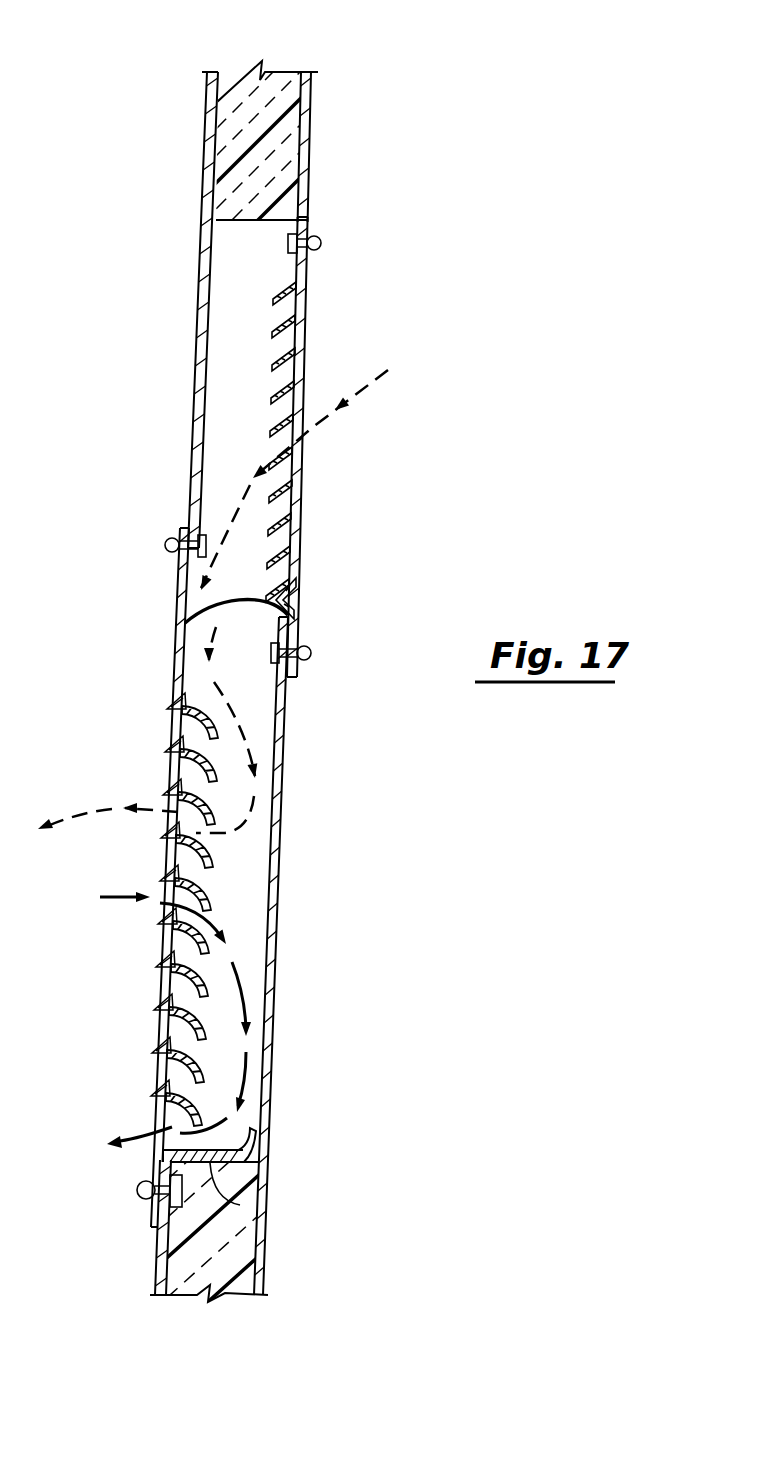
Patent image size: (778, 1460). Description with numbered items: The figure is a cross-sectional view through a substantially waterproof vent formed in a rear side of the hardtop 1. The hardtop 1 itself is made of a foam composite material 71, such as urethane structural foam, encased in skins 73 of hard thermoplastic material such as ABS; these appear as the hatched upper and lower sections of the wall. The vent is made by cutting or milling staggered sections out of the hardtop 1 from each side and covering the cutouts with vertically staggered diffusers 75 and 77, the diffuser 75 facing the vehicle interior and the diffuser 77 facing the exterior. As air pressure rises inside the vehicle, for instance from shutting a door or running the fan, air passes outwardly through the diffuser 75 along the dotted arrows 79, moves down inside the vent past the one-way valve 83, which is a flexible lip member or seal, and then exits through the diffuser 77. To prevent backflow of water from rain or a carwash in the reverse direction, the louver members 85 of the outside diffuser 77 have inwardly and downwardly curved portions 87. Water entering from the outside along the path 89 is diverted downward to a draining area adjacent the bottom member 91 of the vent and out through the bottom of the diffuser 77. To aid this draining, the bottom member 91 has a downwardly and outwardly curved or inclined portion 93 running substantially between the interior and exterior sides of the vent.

The hardtop 1 is at (520, 270).
The foam composite material 71 is at (277, 97).
The skins 73 is at (310, 138).
The diffuser 75 is at (326, 270).
The diffuser 77 is at (164, 652).
The dotted arrows 79 is at (370, 384).
The one-way valve 83 is at (250, 598).
The louver members 85 is at (165, 873).
The curved portions 87 is at (206, 897).
The path 89 is at (117, 897).
The bottom member 91 is at (233, 1207).
The curved or inclined portion 93 is at (253, 1153).